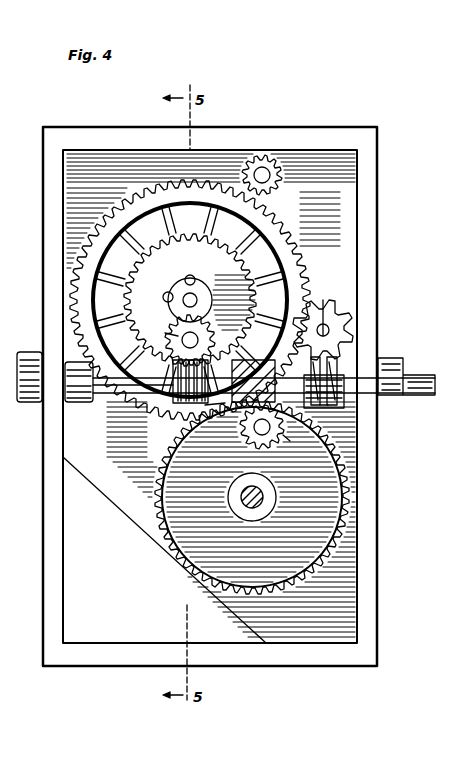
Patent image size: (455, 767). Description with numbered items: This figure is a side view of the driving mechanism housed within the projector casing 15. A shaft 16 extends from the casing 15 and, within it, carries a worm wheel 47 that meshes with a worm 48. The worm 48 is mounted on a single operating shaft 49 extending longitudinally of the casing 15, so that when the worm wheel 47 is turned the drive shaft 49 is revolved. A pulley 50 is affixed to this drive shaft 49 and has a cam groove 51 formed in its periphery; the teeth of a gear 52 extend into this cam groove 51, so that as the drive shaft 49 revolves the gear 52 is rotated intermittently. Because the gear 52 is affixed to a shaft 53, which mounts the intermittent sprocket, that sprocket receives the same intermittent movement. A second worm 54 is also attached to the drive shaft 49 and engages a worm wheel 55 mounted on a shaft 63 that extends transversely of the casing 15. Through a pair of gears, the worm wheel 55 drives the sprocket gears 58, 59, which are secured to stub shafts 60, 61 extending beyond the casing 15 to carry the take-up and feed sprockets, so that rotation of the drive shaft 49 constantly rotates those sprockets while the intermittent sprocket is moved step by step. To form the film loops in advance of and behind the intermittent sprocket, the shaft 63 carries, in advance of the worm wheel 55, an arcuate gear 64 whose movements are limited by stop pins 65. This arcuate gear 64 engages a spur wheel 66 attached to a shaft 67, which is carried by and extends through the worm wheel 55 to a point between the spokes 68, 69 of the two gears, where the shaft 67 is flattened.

The casing 15 is at (378, 181).
The shaft 16 is at (240, 497).
The worm wheel 47 is at (252, 497).
The worm 48 is at (262, 370).
The single operating shaft 49 is at (140, 405).
The pulley 50 is at (312, 378).
The cam groove 51 is at (333, 406).
The gear 52 is at (338, 325).
The shaft 53 is at (327, 327).
The second worm 54 is at (214, 406).
The worm wheel 55 is at (273, 250).
The sprocket gear 58 is at (284, 440).
The sprocket gear 59 is at (258, 152).
The stub shaft 60 is at (258, 436).
The stub shaft 61 is at (283, 177).
The shaft 63 is at (199, 300).
The arcuate gear 64 is at (237, 268).
The stop pins 65 is at (186, 276).
The spur wheel 66 is at (176, 333).
The shaft 67 is at (170, 344).
The spokes 68 is at (265, 310).
The spokes 69 is at (266, 361).